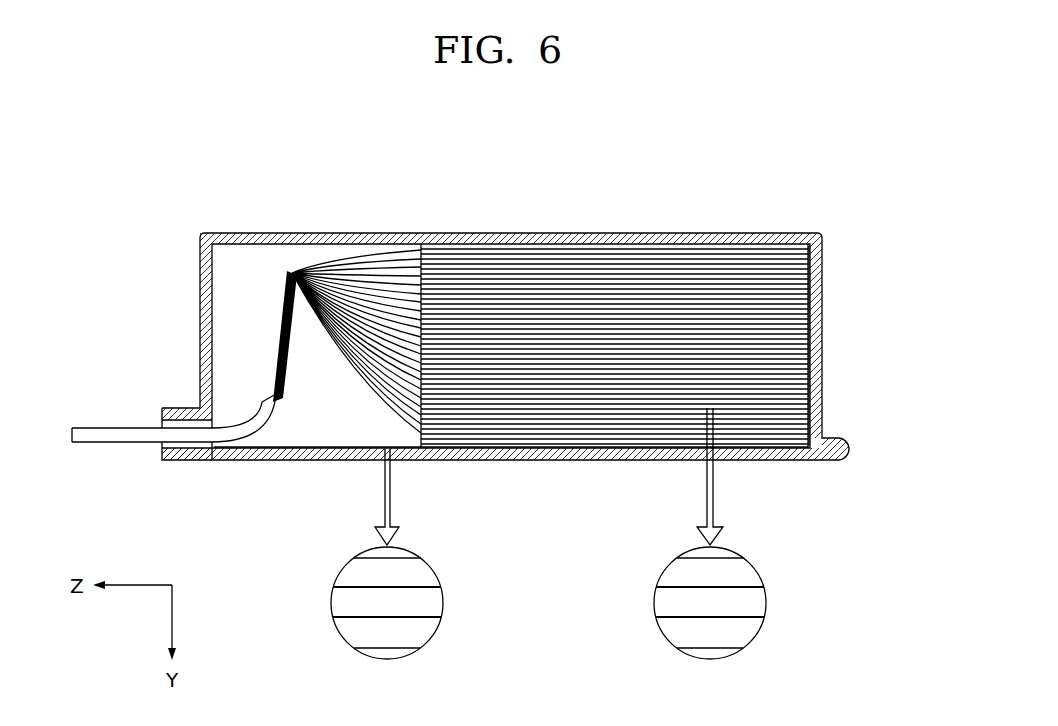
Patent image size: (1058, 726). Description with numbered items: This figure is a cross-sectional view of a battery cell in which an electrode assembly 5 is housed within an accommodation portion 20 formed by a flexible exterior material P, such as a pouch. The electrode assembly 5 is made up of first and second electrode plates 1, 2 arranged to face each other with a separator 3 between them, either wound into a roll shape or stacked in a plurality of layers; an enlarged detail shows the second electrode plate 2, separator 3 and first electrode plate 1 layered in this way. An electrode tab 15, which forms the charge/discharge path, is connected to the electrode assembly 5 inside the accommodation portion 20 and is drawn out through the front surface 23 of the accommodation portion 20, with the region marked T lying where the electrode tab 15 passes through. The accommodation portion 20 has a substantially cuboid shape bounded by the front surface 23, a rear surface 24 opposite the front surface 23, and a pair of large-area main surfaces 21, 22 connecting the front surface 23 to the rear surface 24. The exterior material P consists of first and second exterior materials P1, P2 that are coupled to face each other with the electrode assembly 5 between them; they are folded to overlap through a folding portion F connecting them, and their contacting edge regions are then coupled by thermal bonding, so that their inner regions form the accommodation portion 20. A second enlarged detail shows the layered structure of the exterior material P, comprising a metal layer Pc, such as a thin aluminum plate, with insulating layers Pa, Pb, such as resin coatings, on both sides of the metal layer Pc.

The first electrode plate 1 is at (668, 644).
The second electrode plate 2 is at (675, 575).
The separator 3 is at (668, 603).
The electrode assembly 5 is at (610, 268).
The electrode tab 15 is at (117, 443).
The accommodation portion 20 is at (505, 305).
The first main surface 21 is at (717, 234).
The second main surface 22 is at (548, 461).
The front surface 23 is at (200, 268).
The rear surface 24 is at (822, 266).
The tab / terminal portion T is at (182, 408).
The folding portion F is at (849, 452).
The exterior material P is at (571, 452).
The first exterior material P1 is at (820, 332).
The second exterior material P2 is at (760, 448).
The insulating layer Pa is at (340, 645).
The insulating layer Pb is at (350, 573).
The metal layer Pc is at (345, 603).